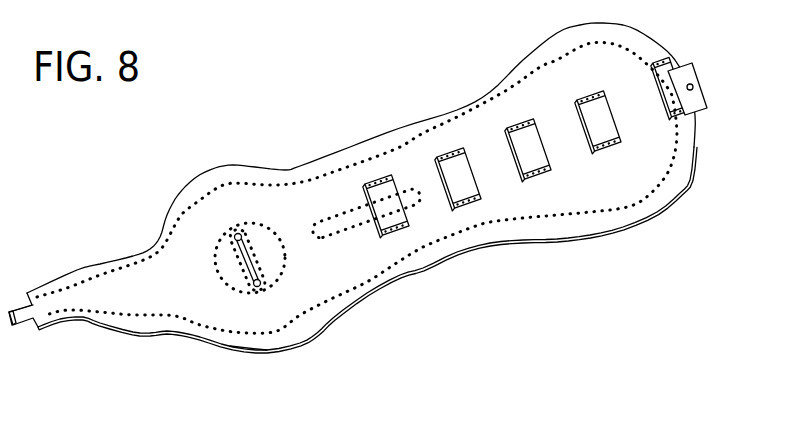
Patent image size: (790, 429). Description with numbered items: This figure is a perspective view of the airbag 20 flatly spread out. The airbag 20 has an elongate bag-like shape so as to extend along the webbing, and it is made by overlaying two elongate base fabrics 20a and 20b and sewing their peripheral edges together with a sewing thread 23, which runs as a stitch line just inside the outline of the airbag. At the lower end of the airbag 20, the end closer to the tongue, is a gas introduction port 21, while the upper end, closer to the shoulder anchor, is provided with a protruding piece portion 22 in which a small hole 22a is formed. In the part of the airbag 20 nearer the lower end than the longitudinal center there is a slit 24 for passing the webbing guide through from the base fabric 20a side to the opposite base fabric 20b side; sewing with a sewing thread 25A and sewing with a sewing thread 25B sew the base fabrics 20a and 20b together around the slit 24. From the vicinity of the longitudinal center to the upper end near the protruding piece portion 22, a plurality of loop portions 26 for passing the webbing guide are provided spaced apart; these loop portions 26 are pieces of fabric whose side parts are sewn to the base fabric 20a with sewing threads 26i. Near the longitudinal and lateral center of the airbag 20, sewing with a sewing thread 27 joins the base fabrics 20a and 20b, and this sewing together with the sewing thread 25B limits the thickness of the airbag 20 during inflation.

The airbag 20 is at (310, 178).
The base fabric 20a is at (292, 338).
The base fabric 20b is at (257, 347).
The gas introduction port 21 is at (23, 318).
The protruding piece portion 22 is at (683, 65).
The small hole 22a is at (693, 84).
The sewing thread 23 is at (397, 260).
The slit 24 is at (252, 253).
The sewing thread 25A is at (250, 242).
The sewing thread 25B is at (278, 279).
The loop portions 26 is at (403, 219).
The sewing threads 26i is at (365, 186).
The sewing thread 27 is at (340, 235).